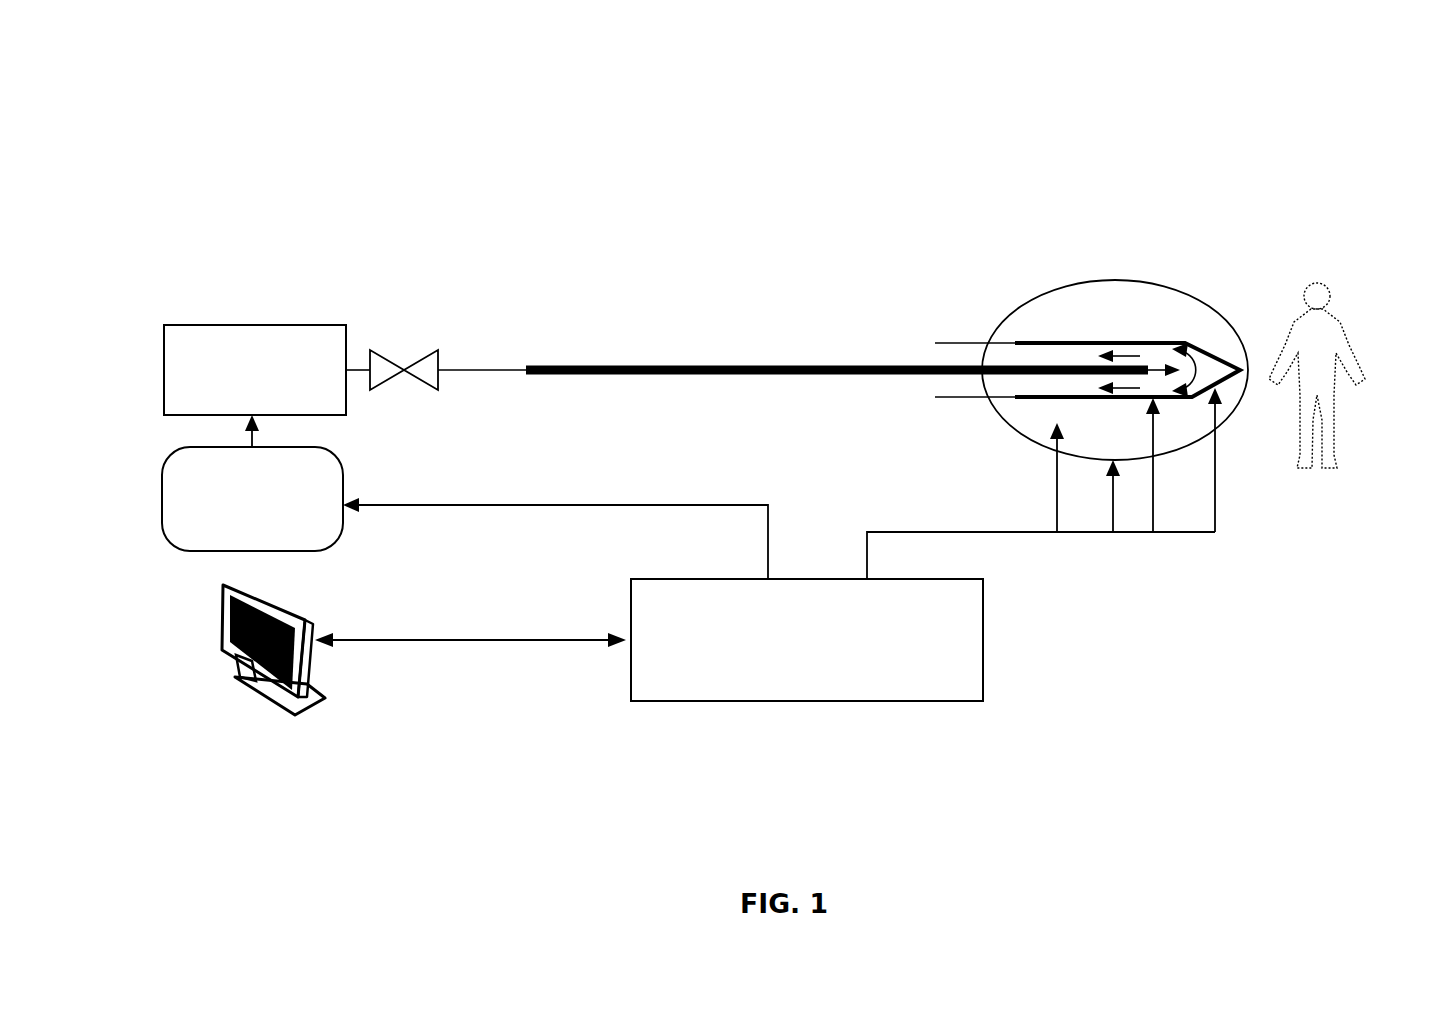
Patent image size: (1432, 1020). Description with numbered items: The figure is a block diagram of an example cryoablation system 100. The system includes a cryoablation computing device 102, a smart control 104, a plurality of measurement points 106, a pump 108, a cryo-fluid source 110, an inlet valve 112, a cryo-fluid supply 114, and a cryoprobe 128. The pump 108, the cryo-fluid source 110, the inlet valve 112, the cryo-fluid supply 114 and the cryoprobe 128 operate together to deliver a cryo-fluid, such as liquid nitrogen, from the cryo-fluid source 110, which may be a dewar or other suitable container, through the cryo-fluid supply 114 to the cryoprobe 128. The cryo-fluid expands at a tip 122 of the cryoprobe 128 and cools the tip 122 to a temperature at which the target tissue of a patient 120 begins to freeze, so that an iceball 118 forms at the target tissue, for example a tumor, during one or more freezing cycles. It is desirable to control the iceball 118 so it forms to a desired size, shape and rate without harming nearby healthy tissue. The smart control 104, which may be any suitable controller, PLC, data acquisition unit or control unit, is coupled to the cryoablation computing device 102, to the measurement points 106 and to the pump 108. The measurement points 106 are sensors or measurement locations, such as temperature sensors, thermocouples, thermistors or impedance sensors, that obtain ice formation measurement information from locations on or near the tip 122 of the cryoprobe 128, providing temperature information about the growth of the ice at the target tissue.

The cryoablation system 100 is at (291, 64).
The cryoablation computing device 102 is at (265, 703).
The smart control 104 is at (800, 702).
The measurement points 106 is at (1150, 555).
The pump 108 is at (192, 552).
The cryo-fluid source 110 is at (238, 325).
The inlet valve 112 is at (390, 357).
The cryo-fluid supply 114 is at (613, 375).
The iceball 118 is at (1100, 281).
The patient 120 is at (1344, 325).
The tip 122 is at (1205, 345).
The cryoprobe 128 is at (958, 399).